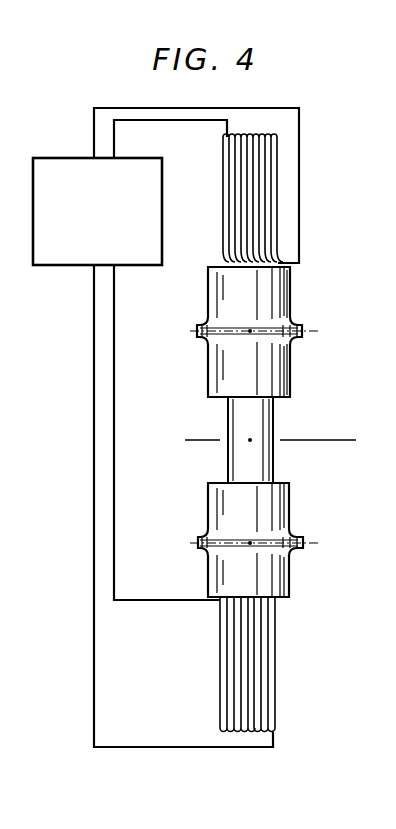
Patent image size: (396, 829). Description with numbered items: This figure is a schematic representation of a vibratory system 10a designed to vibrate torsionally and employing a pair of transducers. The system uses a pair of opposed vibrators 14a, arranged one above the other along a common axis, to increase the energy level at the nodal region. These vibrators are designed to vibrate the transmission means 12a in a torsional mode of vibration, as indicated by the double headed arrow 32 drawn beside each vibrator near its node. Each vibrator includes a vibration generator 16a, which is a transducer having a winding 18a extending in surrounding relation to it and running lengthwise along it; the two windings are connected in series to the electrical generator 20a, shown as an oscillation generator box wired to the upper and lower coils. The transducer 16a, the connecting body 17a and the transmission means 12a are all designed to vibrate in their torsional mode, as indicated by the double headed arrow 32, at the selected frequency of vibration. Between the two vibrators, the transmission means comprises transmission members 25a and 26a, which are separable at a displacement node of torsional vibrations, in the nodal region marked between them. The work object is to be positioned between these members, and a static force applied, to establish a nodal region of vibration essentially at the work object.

The vibratory system 10a is at (304, 260).
The transmission means 12a is at (222, 457).
The vibrator 14a is at (304, 289).
The vibration generator 16a is at (278, 150).
The connecting body 17a is at (285, 304).
The winding 18a is at (256, 185).
The electrical generator 20a is at (50, 256).
The transmission member 25a is at (273, 417).
The transmission member 26a is at (276, 468).
The double headed arrow 32 is at (298, 390).